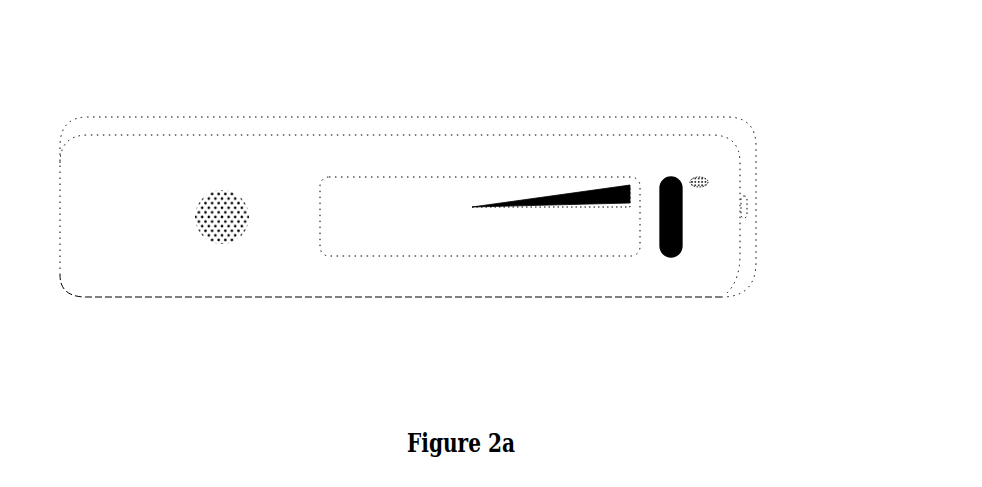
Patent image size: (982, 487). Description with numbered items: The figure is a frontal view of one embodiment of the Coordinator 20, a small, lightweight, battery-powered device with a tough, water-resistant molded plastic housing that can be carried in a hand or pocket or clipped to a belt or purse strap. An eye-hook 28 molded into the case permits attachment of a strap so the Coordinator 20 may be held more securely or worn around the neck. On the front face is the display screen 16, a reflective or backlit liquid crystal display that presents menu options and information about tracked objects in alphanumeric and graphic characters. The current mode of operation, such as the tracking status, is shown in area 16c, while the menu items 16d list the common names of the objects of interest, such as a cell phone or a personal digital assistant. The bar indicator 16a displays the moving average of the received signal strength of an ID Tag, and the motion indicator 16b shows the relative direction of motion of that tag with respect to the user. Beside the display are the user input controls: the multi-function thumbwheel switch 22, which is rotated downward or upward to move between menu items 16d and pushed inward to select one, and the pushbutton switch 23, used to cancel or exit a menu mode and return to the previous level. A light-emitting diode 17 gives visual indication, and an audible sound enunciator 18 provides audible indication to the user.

The display screen 16 is at (460, 177).
The bar indicator 16a is at (598, 190).
The motion indicator 16b is at (573, 222).
The display area 16c is at (415, 202).
The menu item 16d is at (376, 240).
The light-emitting diode 17 is at (290, 176).
The audible sound enunciator 18 is at (222, 247).
The Coordinator 20 is at (385, 108).
The multi-function thumbwheel switch 22 is at (675, 178).
The pushbutton switch 23 is at (707, 178).
The eye-hook 28 is at (743, 215).